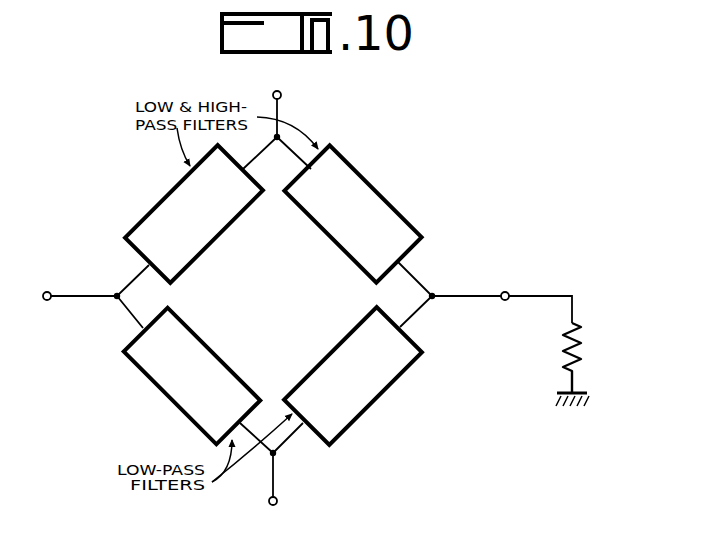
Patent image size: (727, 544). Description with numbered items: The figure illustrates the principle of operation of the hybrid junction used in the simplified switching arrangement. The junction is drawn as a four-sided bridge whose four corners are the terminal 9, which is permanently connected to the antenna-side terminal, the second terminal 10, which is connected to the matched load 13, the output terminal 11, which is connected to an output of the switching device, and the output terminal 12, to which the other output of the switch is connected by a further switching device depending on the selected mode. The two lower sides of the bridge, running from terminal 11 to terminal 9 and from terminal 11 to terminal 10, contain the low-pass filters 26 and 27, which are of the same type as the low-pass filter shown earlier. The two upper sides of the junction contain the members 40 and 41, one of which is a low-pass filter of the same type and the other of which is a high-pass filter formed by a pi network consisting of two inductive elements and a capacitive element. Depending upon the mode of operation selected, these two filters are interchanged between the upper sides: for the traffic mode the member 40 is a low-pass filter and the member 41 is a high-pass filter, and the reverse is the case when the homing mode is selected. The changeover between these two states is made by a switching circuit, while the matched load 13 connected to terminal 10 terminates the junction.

The terminal 9 is at (46, 300).
The second terminal 10 is at (506, 301).
The output terminal 11 is at (279, 502).
The output terminal 12 is at (282, 96).
The matched load 13 is at (580, 349).
The low-pass filter 26 is at (232, 374).
The low-pass filter 27 is at (315, 367).
The member 40 is at (200, 255).
The member 41 is at (338, 251).